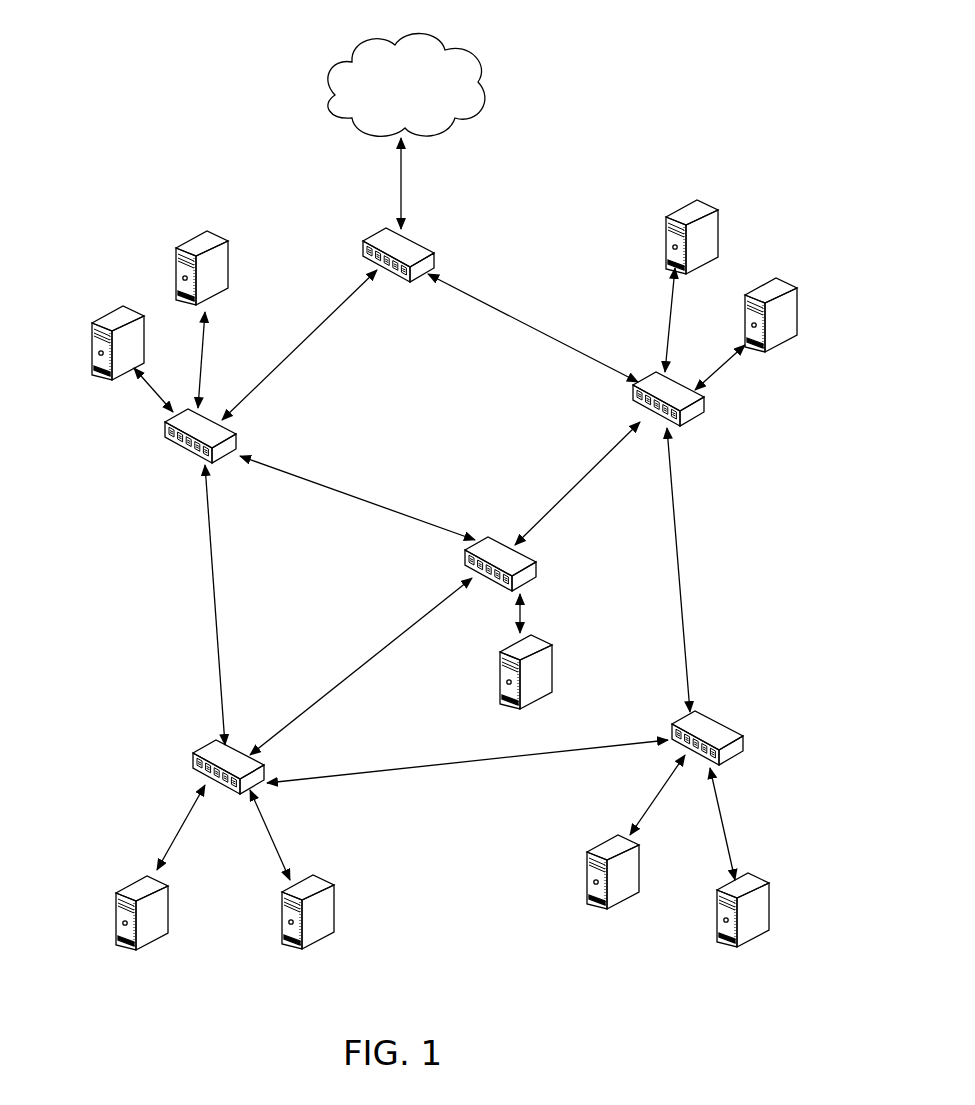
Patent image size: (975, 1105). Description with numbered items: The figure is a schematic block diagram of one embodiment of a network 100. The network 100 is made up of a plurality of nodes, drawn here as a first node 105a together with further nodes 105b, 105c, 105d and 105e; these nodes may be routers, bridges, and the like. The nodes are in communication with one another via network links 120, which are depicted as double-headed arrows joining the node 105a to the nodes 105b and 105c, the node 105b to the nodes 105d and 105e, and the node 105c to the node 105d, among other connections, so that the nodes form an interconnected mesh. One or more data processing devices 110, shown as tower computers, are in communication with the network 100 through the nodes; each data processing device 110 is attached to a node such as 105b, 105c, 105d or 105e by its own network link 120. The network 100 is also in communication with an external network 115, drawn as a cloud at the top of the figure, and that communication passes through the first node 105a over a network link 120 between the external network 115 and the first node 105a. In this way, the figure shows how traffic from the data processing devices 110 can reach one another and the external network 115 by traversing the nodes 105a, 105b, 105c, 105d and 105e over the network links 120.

The network 100 is at (102, 59).
The first node 105a is at (363, 250).
The node 105b is at (165, 432).
The node 105c is at (633, 397).
The node 105d is at (465, 560).
The node 105e is at (193, 764).
The data processing device 110 is at (176, 282).
The external network 115 is at (391, 116).
The network link 120 is at (404, 188).